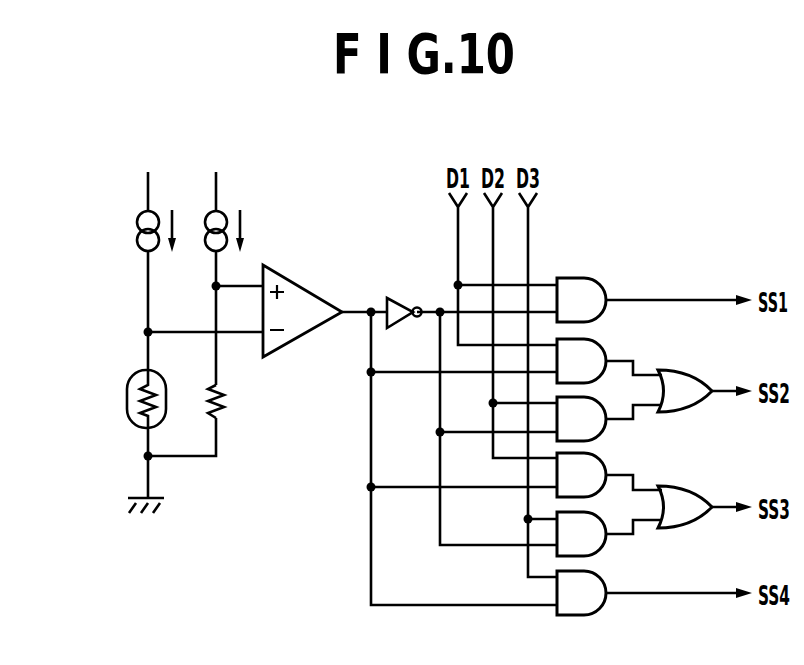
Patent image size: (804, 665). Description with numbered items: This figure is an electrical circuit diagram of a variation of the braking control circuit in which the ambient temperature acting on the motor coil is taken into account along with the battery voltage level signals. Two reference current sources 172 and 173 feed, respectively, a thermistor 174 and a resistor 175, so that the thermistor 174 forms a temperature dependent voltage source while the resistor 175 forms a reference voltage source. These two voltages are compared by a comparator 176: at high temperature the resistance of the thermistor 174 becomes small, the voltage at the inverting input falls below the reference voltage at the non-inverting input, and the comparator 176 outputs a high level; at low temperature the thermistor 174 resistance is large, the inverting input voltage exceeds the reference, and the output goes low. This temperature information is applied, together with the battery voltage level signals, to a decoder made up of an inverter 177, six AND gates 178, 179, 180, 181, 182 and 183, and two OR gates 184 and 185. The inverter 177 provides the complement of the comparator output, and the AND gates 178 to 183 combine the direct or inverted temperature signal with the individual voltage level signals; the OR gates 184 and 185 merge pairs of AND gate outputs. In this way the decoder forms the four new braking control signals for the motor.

The reference current source 172 is at (135, 220).
The reference current source 173 is at (225, 213).
The thermistor 174 is at (128, 382).
The resistor 175 is at (222, 398).
The comparator 176 is at (308, 291).
The inverter 177 is at (398, 298).
The AND gate 178 is at (604, 288).
The AND gate 179 is at (604, 350).
The AND gate 180 is at (604, 432).
The AND gate 181 is at (606, 468).
The AND gate 182 is at (604, 545).
The AND gate 183 is at (604, 603).
The OR gate 184 is at (735, 370).
The OR gate 185 is at (704, 518).